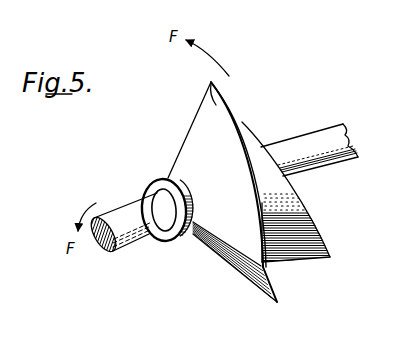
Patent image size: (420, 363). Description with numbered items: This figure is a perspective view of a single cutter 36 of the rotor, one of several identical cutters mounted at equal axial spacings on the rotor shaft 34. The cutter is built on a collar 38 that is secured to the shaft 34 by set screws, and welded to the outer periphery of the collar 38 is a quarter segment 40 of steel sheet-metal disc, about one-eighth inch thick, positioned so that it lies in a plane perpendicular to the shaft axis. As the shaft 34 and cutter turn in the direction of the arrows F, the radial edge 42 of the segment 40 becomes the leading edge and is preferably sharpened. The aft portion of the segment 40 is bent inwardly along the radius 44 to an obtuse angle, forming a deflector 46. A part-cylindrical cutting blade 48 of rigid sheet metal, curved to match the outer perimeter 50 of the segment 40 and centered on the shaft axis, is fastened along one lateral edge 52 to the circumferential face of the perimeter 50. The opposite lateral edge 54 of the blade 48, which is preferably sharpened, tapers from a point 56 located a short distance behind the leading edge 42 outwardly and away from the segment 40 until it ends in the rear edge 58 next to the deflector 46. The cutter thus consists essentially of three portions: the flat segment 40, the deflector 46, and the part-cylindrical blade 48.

The shaft 34 is at (143, 233).
The cutter 36 is at (307, 130).
The collar 38 is at (165, 179).
The quarter segment 40 is at (212, 160).
The radial edge 42 is at (188, 128).
The radius 44 is at (259, 280).
The deflector 46 is at (276, 292).
The part-cylindrical cutting blade 48 is at (301, 200).
The outer perimeter 50 is at (228, 95).
The lateral edge 52 is at (264, 219).
The opposite lateral edge 54 is at (319, 227).
The point 56 is at (315, 195).
The rear edge 58 is at (317, 258).